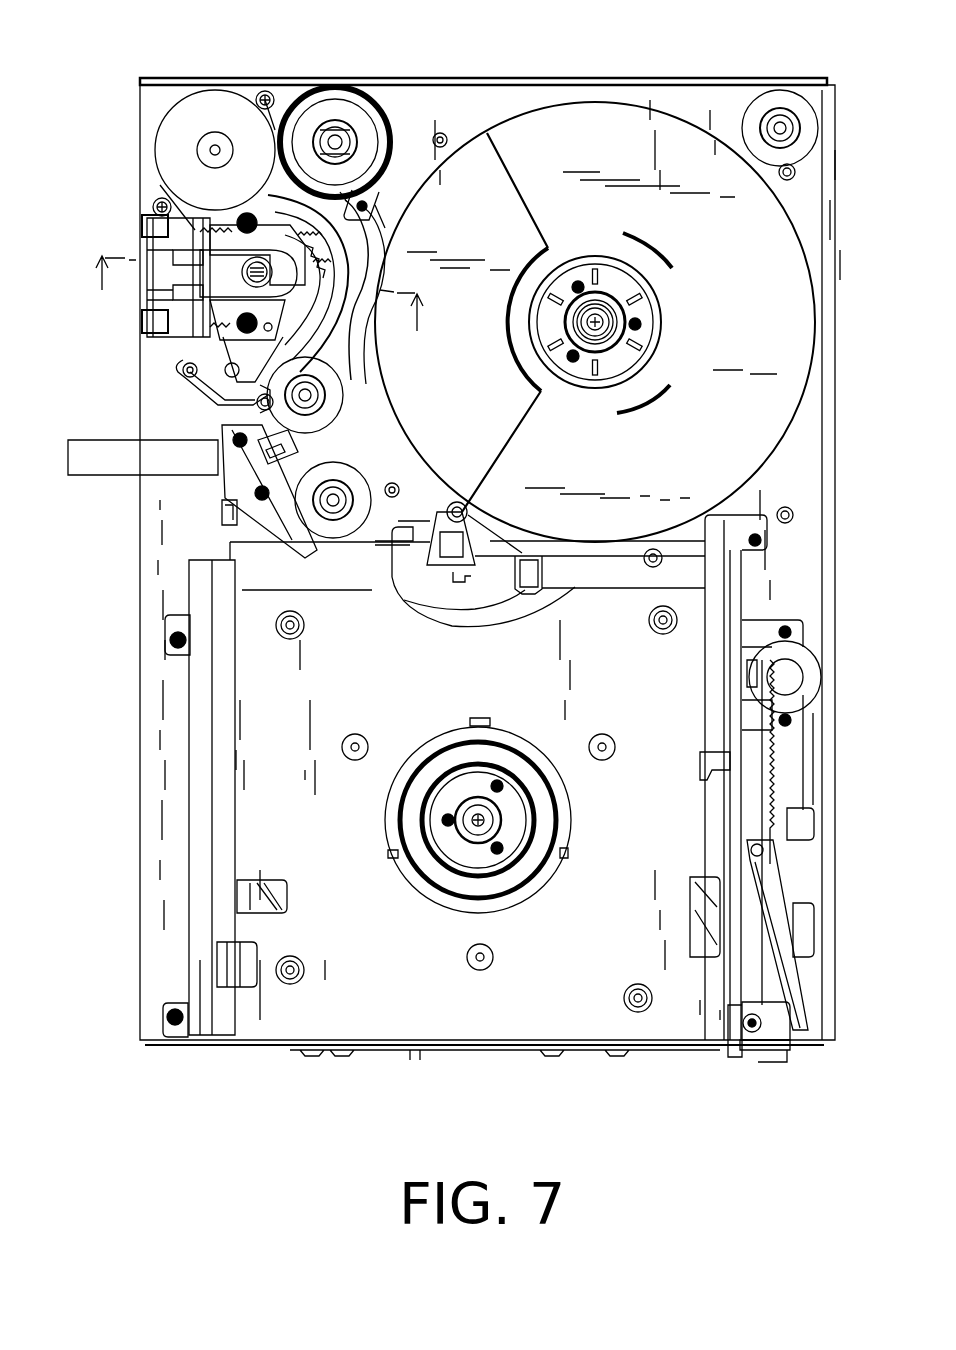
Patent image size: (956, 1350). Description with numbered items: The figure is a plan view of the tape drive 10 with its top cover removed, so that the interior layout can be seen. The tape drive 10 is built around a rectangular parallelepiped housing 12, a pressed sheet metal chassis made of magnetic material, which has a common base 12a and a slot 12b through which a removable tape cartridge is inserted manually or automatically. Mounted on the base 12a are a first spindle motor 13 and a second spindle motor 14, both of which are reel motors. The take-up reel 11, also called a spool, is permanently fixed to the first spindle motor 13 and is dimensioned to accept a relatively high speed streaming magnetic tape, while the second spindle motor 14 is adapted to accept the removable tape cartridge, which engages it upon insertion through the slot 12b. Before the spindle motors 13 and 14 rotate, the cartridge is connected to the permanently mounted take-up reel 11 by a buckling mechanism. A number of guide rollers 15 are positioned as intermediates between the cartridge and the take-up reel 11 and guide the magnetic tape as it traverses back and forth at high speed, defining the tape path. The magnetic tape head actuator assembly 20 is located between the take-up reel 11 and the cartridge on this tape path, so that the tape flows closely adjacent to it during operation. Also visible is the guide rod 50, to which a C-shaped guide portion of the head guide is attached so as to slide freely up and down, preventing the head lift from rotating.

The tape drive 10 is at (118, 1050).
The take-up reel 11 is at (765, 223).
The housing 12 is at (138, 777).
The base 12a is at (160, 692).
The slot 12b is at (722, 968).
The first spindle motor 13 is at (655, 337).
The second spindle motor 14 is at (515, 845).
The guide rollers 15 is at (335, 105).
The magnetic tape head actuator assembly 20 is at (178, 353).
The guide rod 50 is at (235, 385).